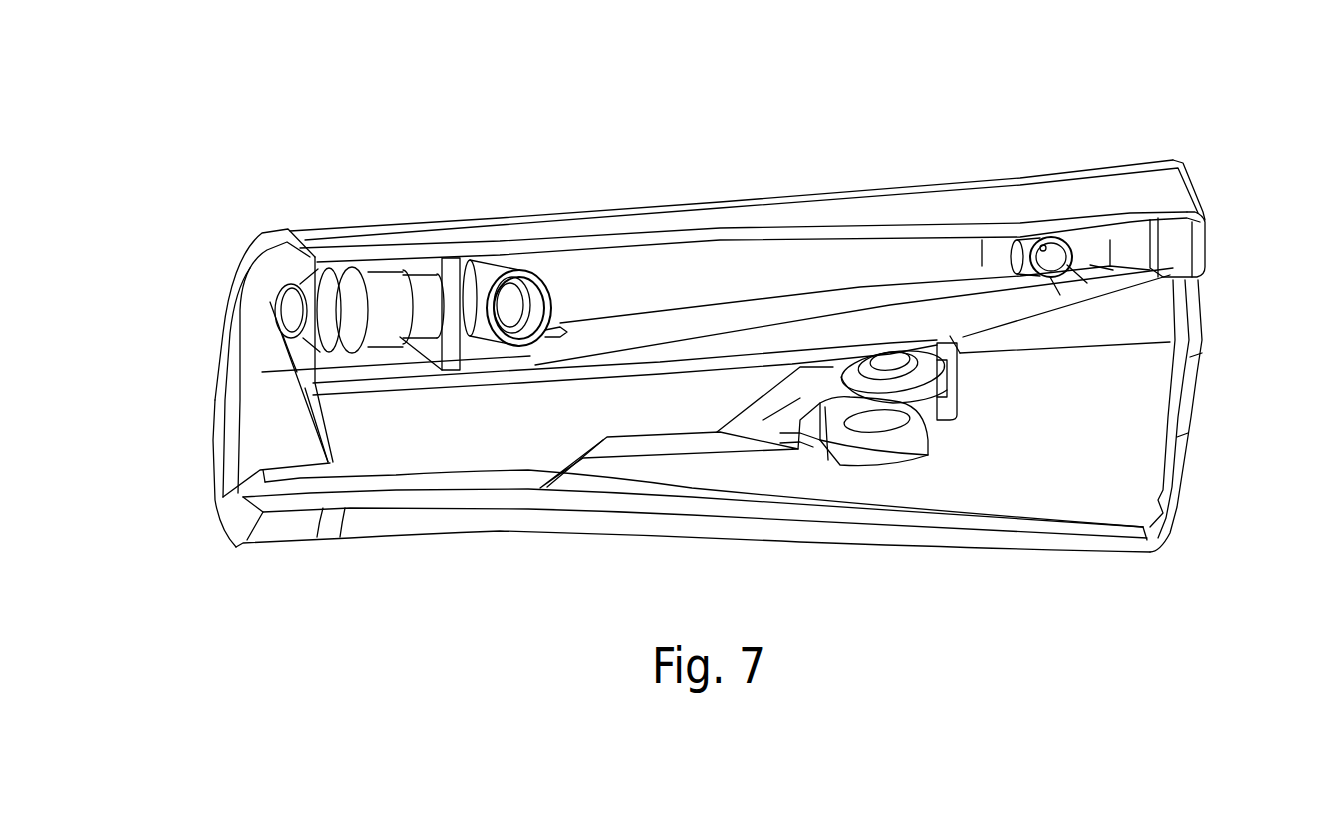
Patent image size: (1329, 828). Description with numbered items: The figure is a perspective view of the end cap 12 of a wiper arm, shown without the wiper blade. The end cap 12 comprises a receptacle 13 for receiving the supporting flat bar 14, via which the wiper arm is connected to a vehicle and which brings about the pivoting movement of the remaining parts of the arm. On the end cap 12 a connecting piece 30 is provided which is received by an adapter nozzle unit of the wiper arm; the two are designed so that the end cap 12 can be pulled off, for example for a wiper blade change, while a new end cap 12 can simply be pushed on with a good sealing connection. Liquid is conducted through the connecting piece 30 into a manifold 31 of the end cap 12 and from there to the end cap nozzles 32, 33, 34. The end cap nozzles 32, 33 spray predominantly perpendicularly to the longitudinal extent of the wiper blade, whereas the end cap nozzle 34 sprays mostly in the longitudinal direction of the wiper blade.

The end cap 12 is at (803, 138).
The receptacle 13 is at (263, 431).
The flat bar 14 is at (887, 447).
The connecting piece 30 is at (373, 282).
The manifold 31 is at (625, 283).
The end cap nozzle 32 is at (517, 268).
The end cap nozzle 33 is at (1050, 255).
The end cap nozzle 34 is at (1181, 247).